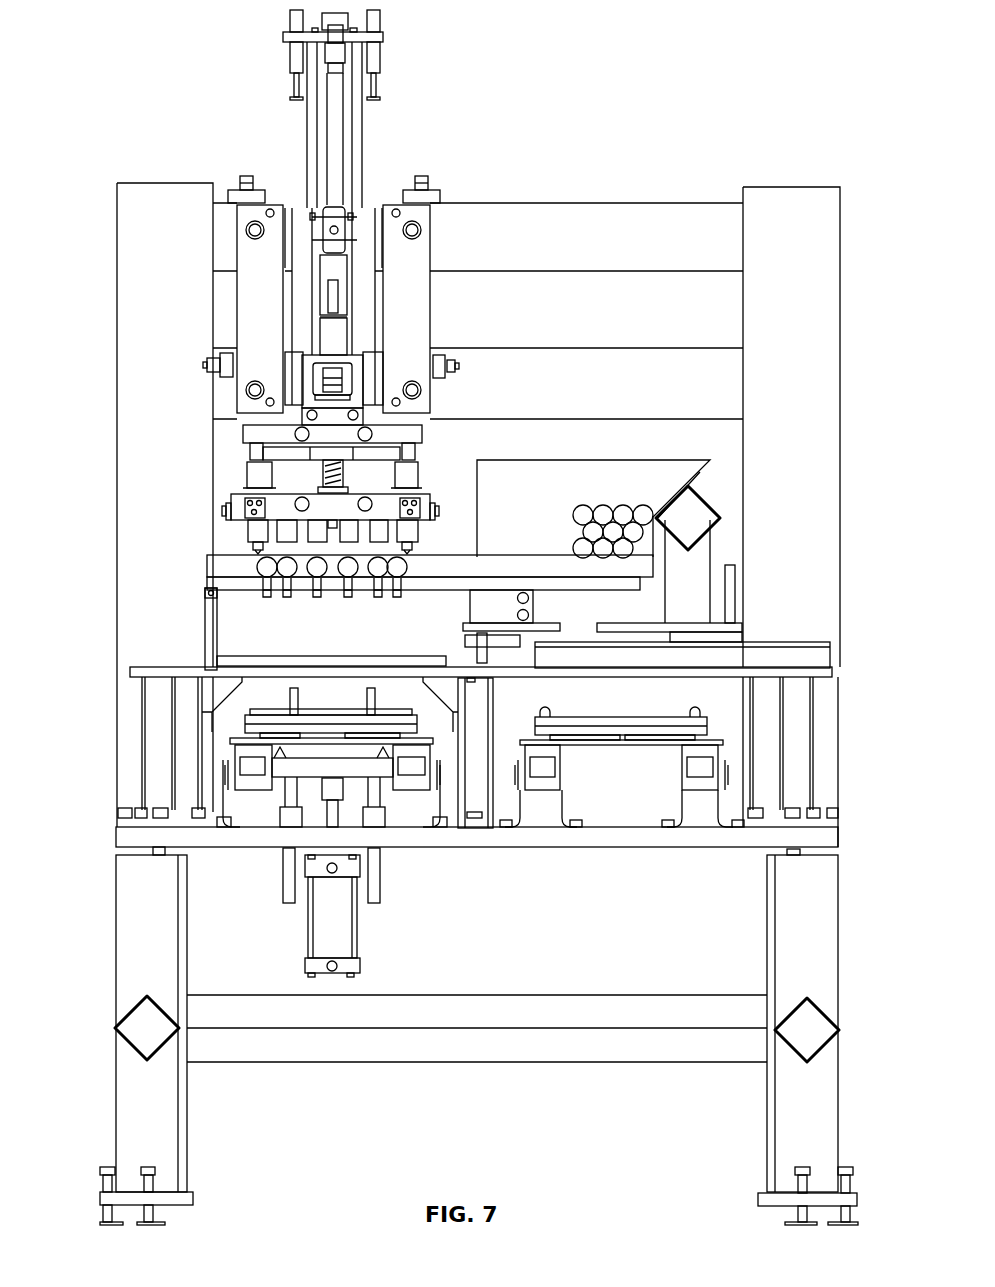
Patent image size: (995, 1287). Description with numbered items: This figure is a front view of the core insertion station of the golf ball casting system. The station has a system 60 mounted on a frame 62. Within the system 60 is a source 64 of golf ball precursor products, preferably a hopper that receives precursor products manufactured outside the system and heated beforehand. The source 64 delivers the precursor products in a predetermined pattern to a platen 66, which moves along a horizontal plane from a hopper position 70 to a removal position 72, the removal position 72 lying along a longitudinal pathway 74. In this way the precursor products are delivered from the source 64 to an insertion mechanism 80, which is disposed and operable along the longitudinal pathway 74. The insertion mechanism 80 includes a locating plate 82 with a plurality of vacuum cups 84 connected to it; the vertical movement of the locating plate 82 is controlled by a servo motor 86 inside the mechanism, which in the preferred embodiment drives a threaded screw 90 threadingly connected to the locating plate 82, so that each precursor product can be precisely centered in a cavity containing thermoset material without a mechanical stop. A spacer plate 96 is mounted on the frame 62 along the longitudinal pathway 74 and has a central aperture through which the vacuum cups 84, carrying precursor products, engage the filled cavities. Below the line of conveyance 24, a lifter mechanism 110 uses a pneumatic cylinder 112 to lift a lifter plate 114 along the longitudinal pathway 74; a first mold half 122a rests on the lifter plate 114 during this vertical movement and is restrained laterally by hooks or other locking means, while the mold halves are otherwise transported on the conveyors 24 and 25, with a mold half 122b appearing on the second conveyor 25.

The system 60 is at (608, 134).
The frame 62 is at (828, 937).
The source of golf ball precursor products 64 is at (703, 470).
The platen 66 is at (207, 565).
The hopper position 70 is at (647, 577).
The removal position 72 is at (210, 580).
The longitudinal pathway 74 is at (203, 605).
The insertion mechanism 80 is at (188, 412).
The locating plate 82 is at (292, 497).
The vacuum cups 84 is at (272, 530).
The servo motor 86 is at (308, 296).
The threaded screw 90 is at (347, 477).
The spacer plate 96 is at (253, 655).
The lifter mechanism 110 is at (380, 934).
The pneumatic cylinder 112 is at (320, 942).
The lifter plate 114 is at (367, 767).
The first mold half 122a is at (257, 716).
The lift platform 122b is at (657, 717).
The conveyor 24 is at (267, 798).
The conveyor 25 is at (628, 767).